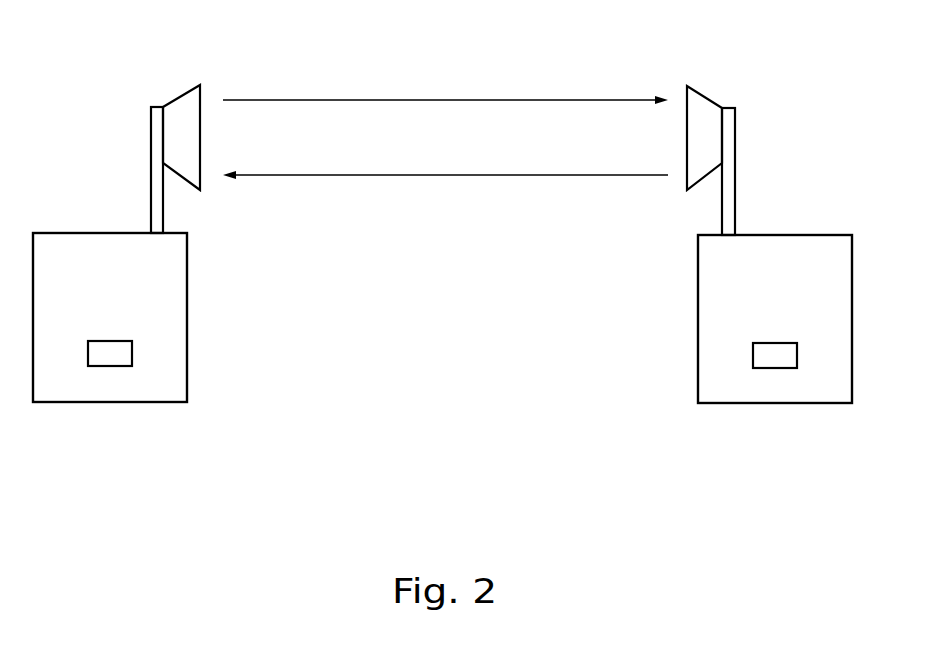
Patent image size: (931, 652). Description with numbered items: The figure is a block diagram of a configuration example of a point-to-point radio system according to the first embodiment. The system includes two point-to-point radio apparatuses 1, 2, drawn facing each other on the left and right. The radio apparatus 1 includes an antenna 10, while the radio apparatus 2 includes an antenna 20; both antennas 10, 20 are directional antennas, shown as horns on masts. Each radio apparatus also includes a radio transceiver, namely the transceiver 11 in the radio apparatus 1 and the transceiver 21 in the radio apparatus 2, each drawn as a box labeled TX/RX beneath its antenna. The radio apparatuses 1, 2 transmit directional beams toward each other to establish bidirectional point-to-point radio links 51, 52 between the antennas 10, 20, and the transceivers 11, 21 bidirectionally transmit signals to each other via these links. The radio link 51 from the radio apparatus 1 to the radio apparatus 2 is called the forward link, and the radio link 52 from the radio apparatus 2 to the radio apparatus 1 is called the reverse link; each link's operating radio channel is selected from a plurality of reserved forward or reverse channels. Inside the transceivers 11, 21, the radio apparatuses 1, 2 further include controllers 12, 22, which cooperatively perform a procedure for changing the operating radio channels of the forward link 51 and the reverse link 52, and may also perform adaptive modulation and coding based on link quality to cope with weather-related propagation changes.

The point-to-point radio apparatus 1 is at (86, 130).
The point-to-point radio apparatus 2 is at (803, 129).
The antenna 10 is at (176, 100).
The transceiver 11 is at (70, 232).
The controller 12 is at (106, 367).
The antenna 20 is at (714, 100).
The transceiver 21 is at (782, 234).
The controller 22 is at (772, 368).
The forward link 51 is at (593, 100).
The reverse link 52 is at (572, 177).